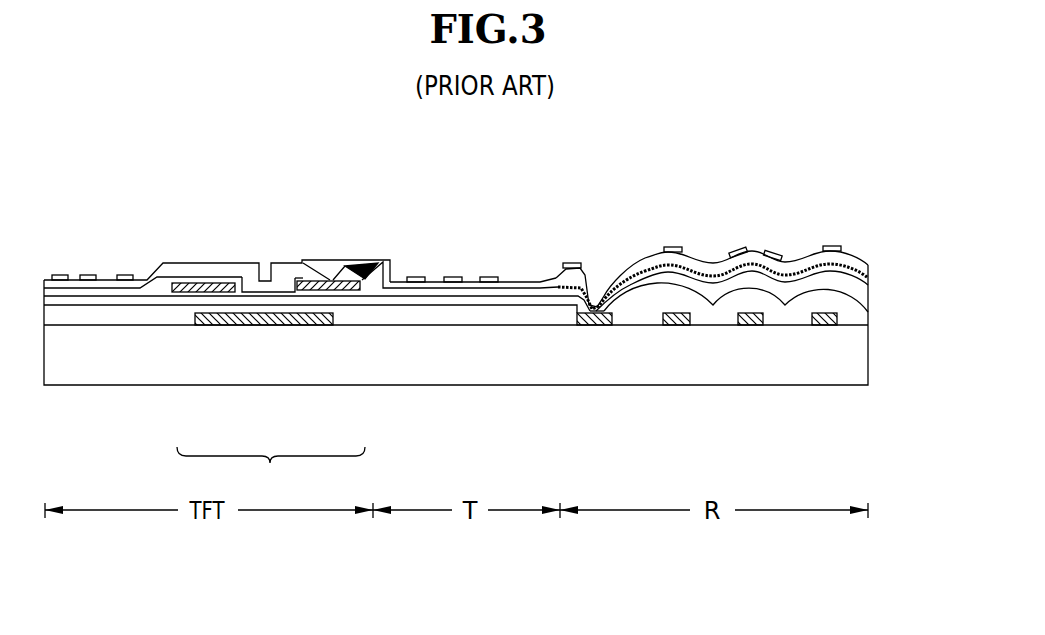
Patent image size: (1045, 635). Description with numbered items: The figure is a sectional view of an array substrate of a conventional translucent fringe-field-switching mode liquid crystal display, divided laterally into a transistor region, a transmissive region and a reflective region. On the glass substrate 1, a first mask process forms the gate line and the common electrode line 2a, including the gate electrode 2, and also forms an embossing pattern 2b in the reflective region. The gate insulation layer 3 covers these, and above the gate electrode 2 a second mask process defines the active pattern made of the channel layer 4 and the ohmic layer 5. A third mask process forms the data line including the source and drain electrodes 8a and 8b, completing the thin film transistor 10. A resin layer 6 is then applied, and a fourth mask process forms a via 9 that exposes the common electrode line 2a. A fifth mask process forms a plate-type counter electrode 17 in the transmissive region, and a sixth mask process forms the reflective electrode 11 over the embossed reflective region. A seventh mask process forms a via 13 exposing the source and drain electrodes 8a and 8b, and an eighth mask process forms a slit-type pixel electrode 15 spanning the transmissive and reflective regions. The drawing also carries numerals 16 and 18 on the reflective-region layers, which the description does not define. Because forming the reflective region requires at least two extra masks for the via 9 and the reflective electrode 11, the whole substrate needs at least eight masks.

The glass substrate 1 is at (868, 353).
The gate electrode 2 is at (222, 318).
The common electrode line 2a is at (594, 325).
The embossing pattern 2b is at (748, 325).
The gate insulation layer 3 is at (357, 305).
The channel layer 4 is at (260, 298).
The ohmic layer 5 is at (310, 293).
The resin layer 6 is at (431, 297).
The source electrode 8a is at (328, 290).
The drain electrode 8b is at (191, 292).
The via 9 is at (569, 308).
The TFT 10 is at (271, 469).
The reflective electrode 11 is at (572, 263).
The via 13 is at (370, 263).
The slit-type pixel electrode 15 is at (490, 276).
The organic layer surface 16 is at (805, 263).
The plate-type counter electrode 17 is at (431, 283).
The reflective electrode 18 is at (868, 268).